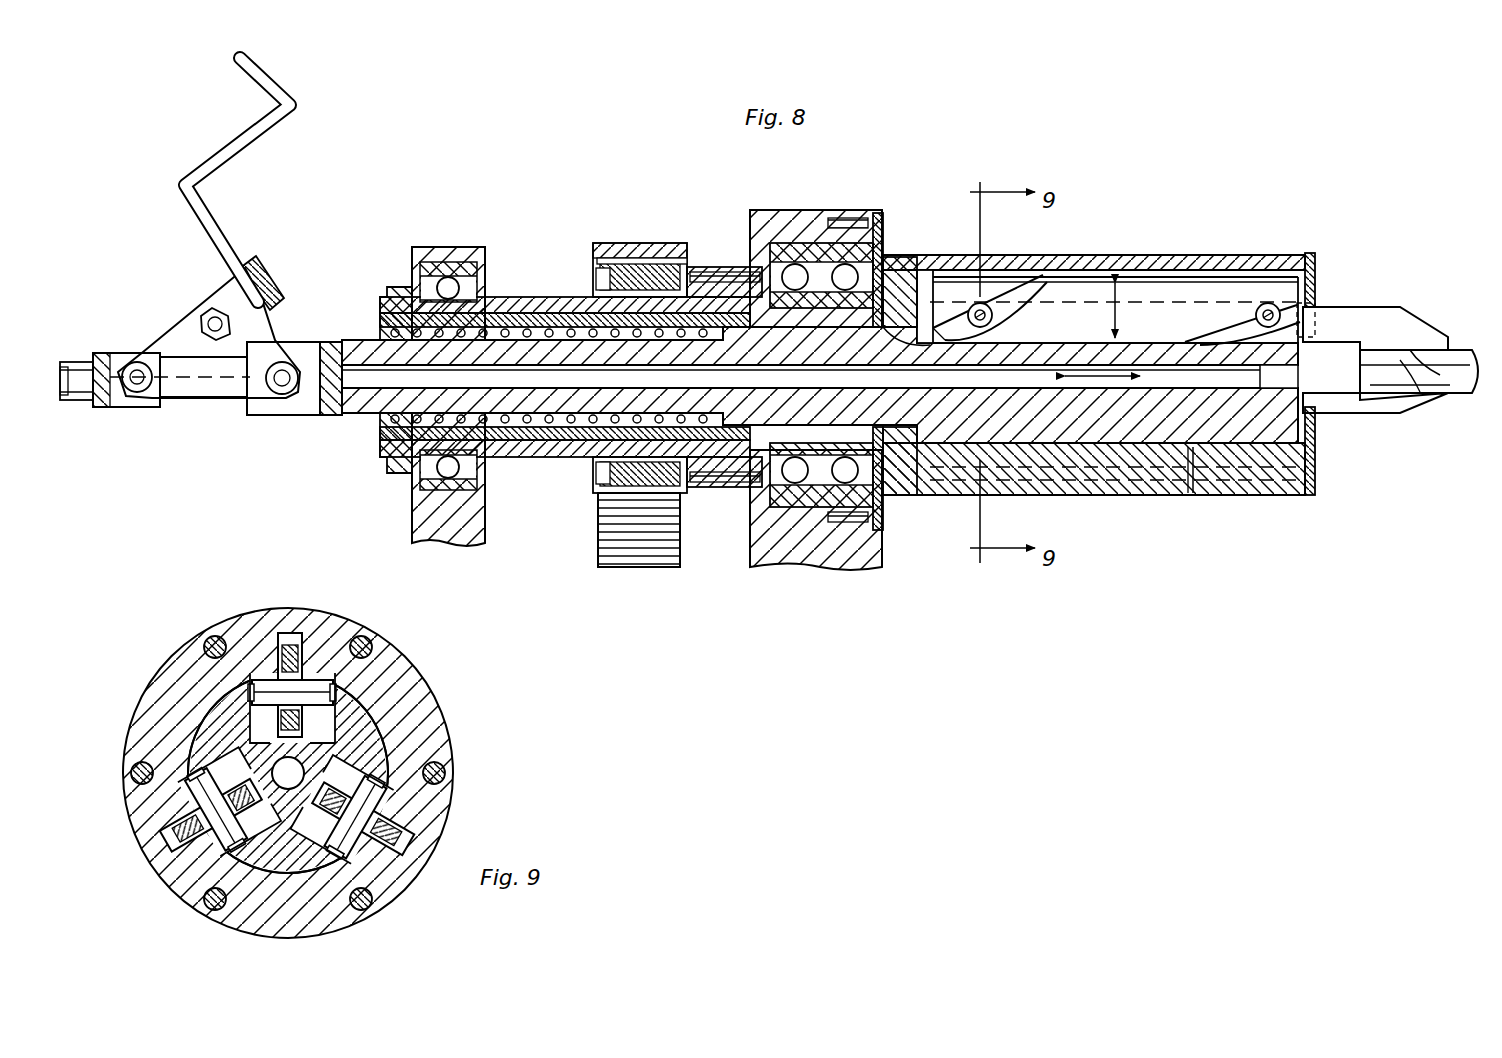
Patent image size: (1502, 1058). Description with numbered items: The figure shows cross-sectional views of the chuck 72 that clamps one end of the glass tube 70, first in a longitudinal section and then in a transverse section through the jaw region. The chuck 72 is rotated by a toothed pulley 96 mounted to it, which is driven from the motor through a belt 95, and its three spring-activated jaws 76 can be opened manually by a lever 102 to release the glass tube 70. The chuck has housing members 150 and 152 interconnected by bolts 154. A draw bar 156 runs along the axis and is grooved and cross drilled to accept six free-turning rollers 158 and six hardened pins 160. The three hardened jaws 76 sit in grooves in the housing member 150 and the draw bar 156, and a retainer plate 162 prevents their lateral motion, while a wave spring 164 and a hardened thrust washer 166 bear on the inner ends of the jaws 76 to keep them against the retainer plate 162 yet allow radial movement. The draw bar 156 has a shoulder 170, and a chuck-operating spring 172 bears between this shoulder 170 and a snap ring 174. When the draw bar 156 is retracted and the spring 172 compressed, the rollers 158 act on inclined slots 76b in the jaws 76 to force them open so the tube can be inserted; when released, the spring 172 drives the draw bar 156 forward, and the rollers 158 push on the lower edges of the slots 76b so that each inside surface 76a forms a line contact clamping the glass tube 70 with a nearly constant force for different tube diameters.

In FIG. 8, the glass tube 70 is at (1470, 395).
In FIG. 8, the chuck 72 is at (1130, 255).
In FIG. 8, the jaws 76 is at (1382, 307).
In FIG. 9, the jaws 76 is at (313, 650).
In FIG. 8, the inside surface 76a is at (1415, 352).
In FIG. 8, the inclined slots 76b is at (990, 325).
In FIG. 9, the inclined slots 76b is at (250, 683).
In FIG. 8, the belt 95 is at (640, 243).
In FIG. 8, the toothed pulley 96 is at (597, 262).
In FIG. 8, the lever 102 is at (293, 107).
In FIG. 8, the housing member 150 is at (1237, 255).
In FIG. 9, the housing member 150 is at (383, 722).
In FIG. 8, the housing member 152 is at (720, 453).
In FIG. 8, the bolts 154 is at (1195, 497).
In FIG. 9, the bolts 154 is at (142, 707).
In FIG. 8, the draw bar 156 is at (1133, 430).
In FIG. 9, the draw bar 156 is at (365, 730).
In FIG. 8, the free-turning rollers 158 is at (1003, 298).
In FIG. 9, the free-turning rollers 158 is at (300, 686).
In FIG. 8, the hardened pins 160 is at (978, 300).
In FIG. 9, the hardened pins 160 is at (335, 697).
In FIG. 8, the retainer plate 162 is at (1318, 450).
In FIG. 8, the wave spring 164 is at (903, 257).
In FIG. 8, the hardened thrust washer 166 is at (915, 257).
In FIG. 8, the shoulder 170 is at (703, 290).
In FIG. 8, the chuck-operating spring 172 is at (557, 300).
In FIG. 8, the snap ring 174 is at (380, 335).